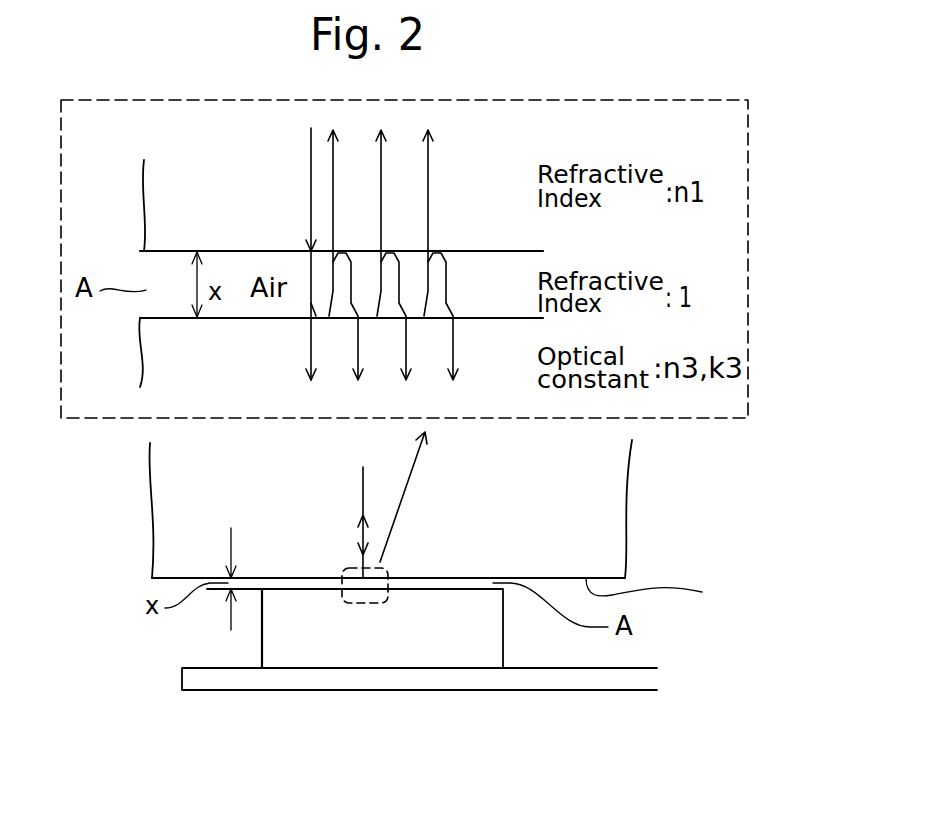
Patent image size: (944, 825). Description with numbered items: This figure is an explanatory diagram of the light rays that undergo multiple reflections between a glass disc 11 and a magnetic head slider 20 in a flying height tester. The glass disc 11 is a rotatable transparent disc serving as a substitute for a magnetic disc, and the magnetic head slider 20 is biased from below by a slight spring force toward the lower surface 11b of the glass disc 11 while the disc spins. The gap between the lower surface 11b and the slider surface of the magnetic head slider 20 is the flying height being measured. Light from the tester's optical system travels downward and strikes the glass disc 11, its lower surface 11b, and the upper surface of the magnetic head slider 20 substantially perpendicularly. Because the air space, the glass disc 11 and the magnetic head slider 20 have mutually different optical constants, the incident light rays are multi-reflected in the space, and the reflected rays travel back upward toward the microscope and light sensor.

The glass disc 11 is at (160, 182).
The lower surface of the glass disc 11b is at (676, 595).
The magnetic head slider 20 is at (160, 358).